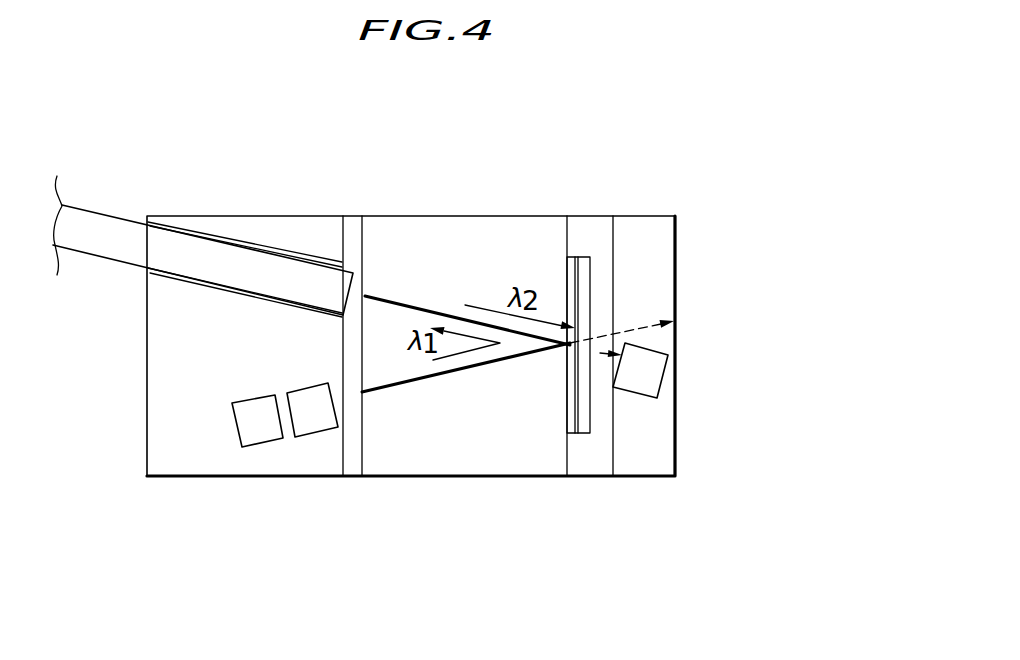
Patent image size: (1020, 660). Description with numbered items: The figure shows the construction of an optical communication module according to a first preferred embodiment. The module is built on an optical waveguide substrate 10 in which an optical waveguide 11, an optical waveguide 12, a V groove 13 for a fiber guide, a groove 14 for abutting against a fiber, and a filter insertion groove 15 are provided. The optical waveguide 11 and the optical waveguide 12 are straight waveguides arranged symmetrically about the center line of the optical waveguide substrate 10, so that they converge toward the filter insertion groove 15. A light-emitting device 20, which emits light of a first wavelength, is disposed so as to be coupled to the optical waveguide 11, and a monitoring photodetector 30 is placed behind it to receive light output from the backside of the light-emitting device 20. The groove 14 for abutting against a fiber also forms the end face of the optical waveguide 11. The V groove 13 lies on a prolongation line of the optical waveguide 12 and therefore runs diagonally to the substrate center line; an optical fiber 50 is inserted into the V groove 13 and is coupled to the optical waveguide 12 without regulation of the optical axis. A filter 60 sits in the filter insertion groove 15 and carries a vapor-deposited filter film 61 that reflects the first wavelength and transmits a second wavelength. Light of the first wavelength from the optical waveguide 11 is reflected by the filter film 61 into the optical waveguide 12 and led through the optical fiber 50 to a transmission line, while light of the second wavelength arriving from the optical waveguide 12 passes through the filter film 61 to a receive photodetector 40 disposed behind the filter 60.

The optical waveguide substrate 10 is at (391, 216).
The optical waveguide 11 is at (457, 370).
The optical waveguide 12 is at (430, 312).
The V groove for a fiber guide 13 is at (213, 235).
The groove for abutting against a fiber 14 is at (352, 465).
The filter insertion groove 15 is at (585, 463).
The light-emitting device 20 is at (290, 393).
The monitoring photodetector 30 is at (248, 437).
The receive photodetector 40 is at (652, 380).
The optical fiber 50 is at (108, 233).
The filter 60 is at (583, 255).
The filter film 61 is at (573, 257).